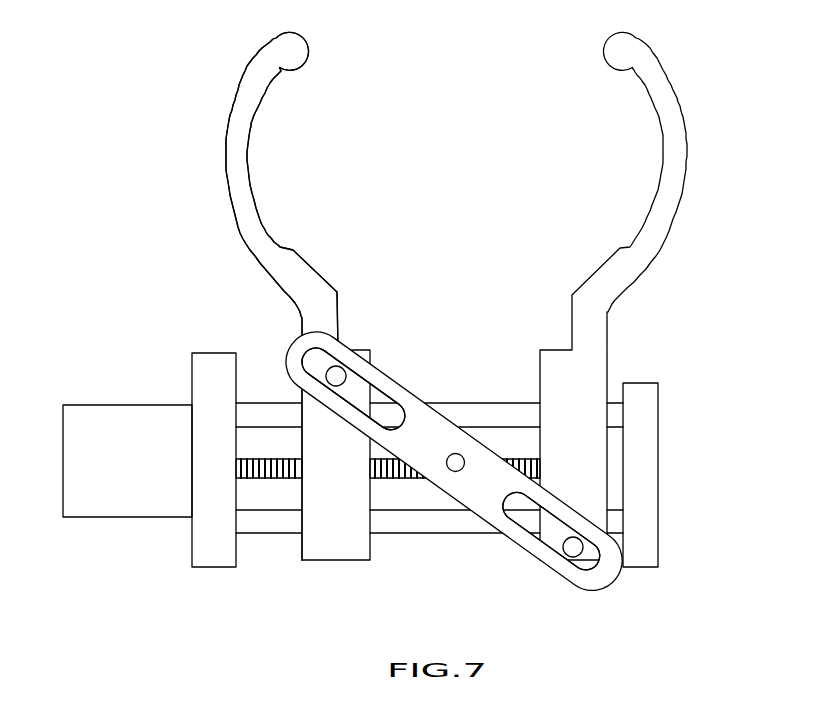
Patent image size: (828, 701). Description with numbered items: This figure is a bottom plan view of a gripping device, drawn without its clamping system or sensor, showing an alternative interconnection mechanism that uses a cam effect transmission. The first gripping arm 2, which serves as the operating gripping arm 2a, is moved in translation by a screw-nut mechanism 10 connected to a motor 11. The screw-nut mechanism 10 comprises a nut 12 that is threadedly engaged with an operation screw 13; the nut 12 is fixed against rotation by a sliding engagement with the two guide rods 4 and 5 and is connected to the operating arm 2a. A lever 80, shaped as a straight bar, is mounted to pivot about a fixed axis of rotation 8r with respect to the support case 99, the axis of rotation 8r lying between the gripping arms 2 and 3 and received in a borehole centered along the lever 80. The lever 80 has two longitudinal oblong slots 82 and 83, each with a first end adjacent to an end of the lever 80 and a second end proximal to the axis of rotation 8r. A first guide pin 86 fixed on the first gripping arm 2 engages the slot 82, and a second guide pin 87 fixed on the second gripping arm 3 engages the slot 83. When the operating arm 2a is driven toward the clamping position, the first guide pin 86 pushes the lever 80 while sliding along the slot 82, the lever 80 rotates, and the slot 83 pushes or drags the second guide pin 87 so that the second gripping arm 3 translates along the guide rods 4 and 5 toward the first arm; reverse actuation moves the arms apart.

The first gripping arm 2 is at (242, 117).
The operating gripping arm 2a is at (282, 296).
The second gripping arm 3 is at (672, 118).
The guide rod 4 is at (612, 412).
The guide rod 5 is at (618, 520).
The axis of rotation 8r is at (456, 462).
The screw-nut mechanism 10 is at (348, 593).
The motor 11 is at (135, 432).
The nut 12 is at (342, 540).
The operation screw 13 is at (275, 480).
The lever 80 is at (423, 465).
The oblong slot 82 is at (387, 398).
The oblong slot 83 is at (523, 533).
The first guide pin 86 is at (336, 376).
The second guide pin 87 is at (573, 547).
The support case 99 is at (637, 467).